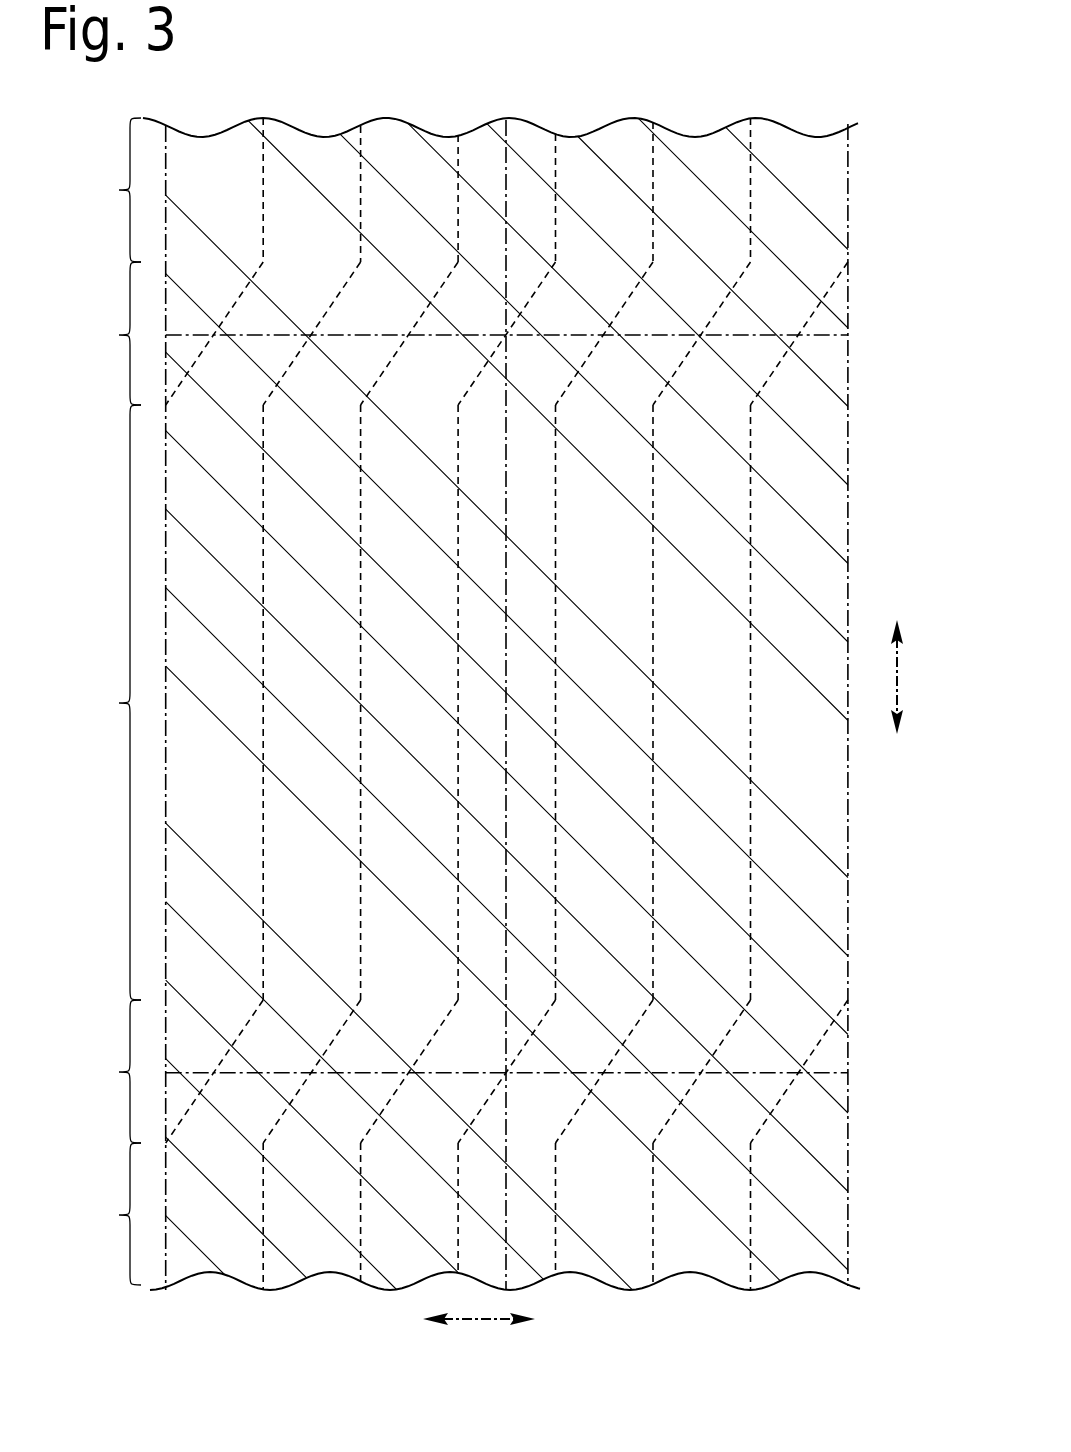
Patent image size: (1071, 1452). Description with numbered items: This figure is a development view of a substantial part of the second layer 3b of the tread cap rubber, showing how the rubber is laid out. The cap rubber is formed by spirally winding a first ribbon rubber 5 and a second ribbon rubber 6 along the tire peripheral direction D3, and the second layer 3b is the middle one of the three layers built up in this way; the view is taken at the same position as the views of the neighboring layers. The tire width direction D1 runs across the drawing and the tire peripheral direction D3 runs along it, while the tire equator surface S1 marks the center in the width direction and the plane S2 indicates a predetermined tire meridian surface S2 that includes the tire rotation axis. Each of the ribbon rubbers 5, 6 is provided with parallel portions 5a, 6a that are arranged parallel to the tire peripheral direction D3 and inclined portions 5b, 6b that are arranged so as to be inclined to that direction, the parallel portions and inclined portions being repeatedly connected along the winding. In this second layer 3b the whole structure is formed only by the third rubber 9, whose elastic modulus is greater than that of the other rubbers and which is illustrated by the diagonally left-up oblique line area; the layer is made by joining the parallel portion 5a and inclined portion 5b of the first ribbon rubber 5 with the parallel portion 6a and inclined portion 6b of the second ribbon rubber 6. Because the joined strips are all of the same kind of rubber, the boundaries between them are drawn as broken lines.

The second layer 3b is at (826, 518).
The first ribbon rubber 5 is at (210, 158).
The second ribbon rubber 6 is at (313, 158).
The parallel portion 5a is at (100, 701).
The parallel portion 6a is at (100, 701).
The inclined portion 5b is at (100, 702).
The inclined portion 6b is at (100, 702).
The third rubber 9 is at (216, 1252).
The tire equator surface S1 is at (482, 128).
The tire meridian surface S2 is at (826, 331).
The tire width direction D1 is at (479, 1331).
The tire peripheral direction D3 is at (913, 677).